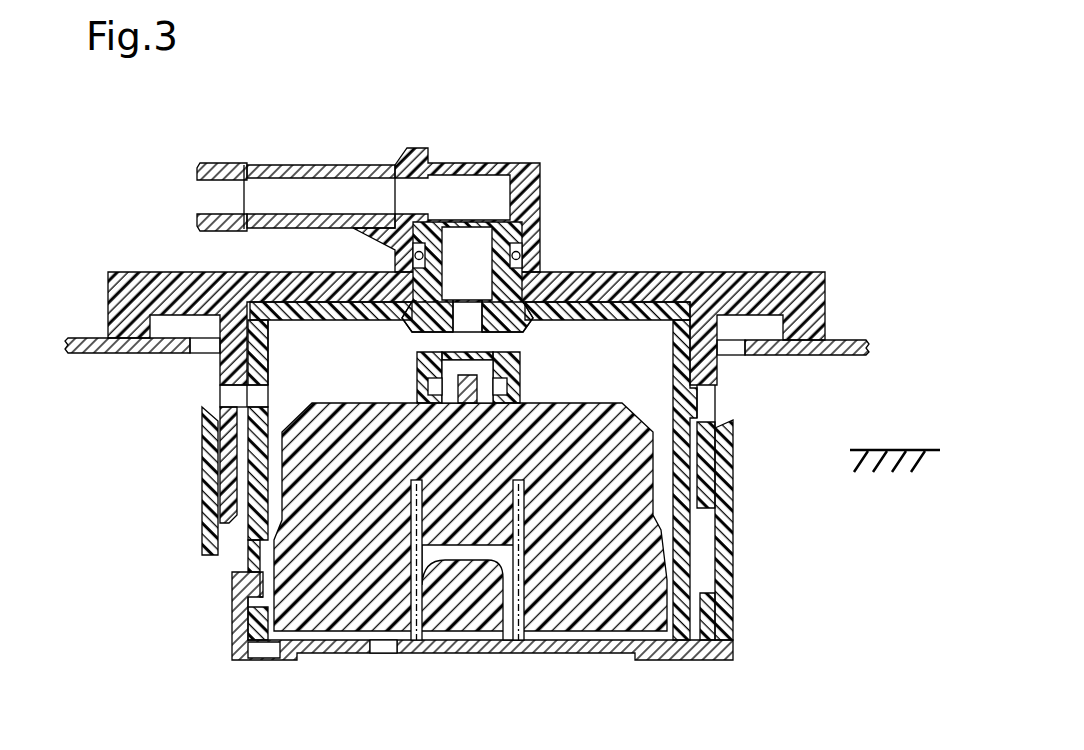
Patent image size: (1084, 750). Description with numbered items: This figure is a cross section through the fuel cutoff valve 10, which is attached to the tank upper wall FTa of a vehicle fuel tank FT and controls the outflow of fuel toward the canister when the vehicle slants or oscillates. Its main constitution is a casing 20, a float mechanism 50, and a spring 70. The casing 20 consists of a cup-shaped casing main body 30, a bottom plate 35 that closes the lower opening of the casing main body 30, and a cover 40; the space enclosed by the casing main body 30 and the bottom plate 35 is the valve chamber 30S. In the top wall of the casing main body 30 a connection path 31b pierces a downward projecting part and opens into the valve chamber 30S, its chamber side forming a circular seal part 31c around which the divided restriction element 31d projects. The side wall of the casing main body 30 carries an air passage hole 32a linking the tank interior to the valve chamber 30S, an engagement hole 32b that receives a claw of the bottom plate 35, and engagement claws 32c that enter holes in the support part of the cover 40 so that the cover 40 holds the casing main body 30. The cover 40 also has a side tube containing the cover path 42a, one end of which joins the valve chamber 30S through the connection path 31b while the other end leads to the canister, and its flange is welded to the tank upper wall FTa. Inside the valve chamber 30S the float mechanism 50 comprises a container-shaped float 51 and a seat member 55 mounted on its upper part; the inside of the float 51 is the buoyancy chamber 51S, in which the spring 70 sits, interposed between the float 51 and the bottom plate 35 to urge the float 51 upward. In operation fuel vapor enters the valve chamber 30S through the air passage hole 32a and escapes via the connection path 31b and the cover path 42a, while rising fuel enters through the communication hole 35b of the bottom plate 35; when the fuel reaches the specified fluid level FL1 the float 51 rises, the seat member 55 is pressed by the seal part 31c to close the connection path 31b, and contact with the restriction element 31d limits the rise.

The fuel cutoff valve 10 is at (708, 187).
The casing 20 is at (107, 478).
The casing main body 30 is at (248, 516).
The valve chamber 30S is at (620, 348).
The connection path 31b is at (470, 312).
The seal part 31c is at (488, 323).
The restriction element 31d is at (424, 326).
The air passage hole 32a is at (257, 398).
The engagement hole 32b is at (263, 578).
The engagement claw 32c is at (707, 400).
The bottom plate 35 is at (235, 656).
The communication hole 35b is at (393, 650).
The cover 40 is at (243, 292).
The cover path 42a is at (353, 192).
The float mechanism 50 is at (803, 460).
The float 51 is at (658, 512).
The buoyancy chamber 51S is at (514, 630).
The seat member 55 is at (518, 372).
The spring 70 is at (522, 573).
The fuel tank FT is at (500, 311).
The tank upper wall FTa is at (833, 338).
The specified fluid level FL1 is at (893, 449).